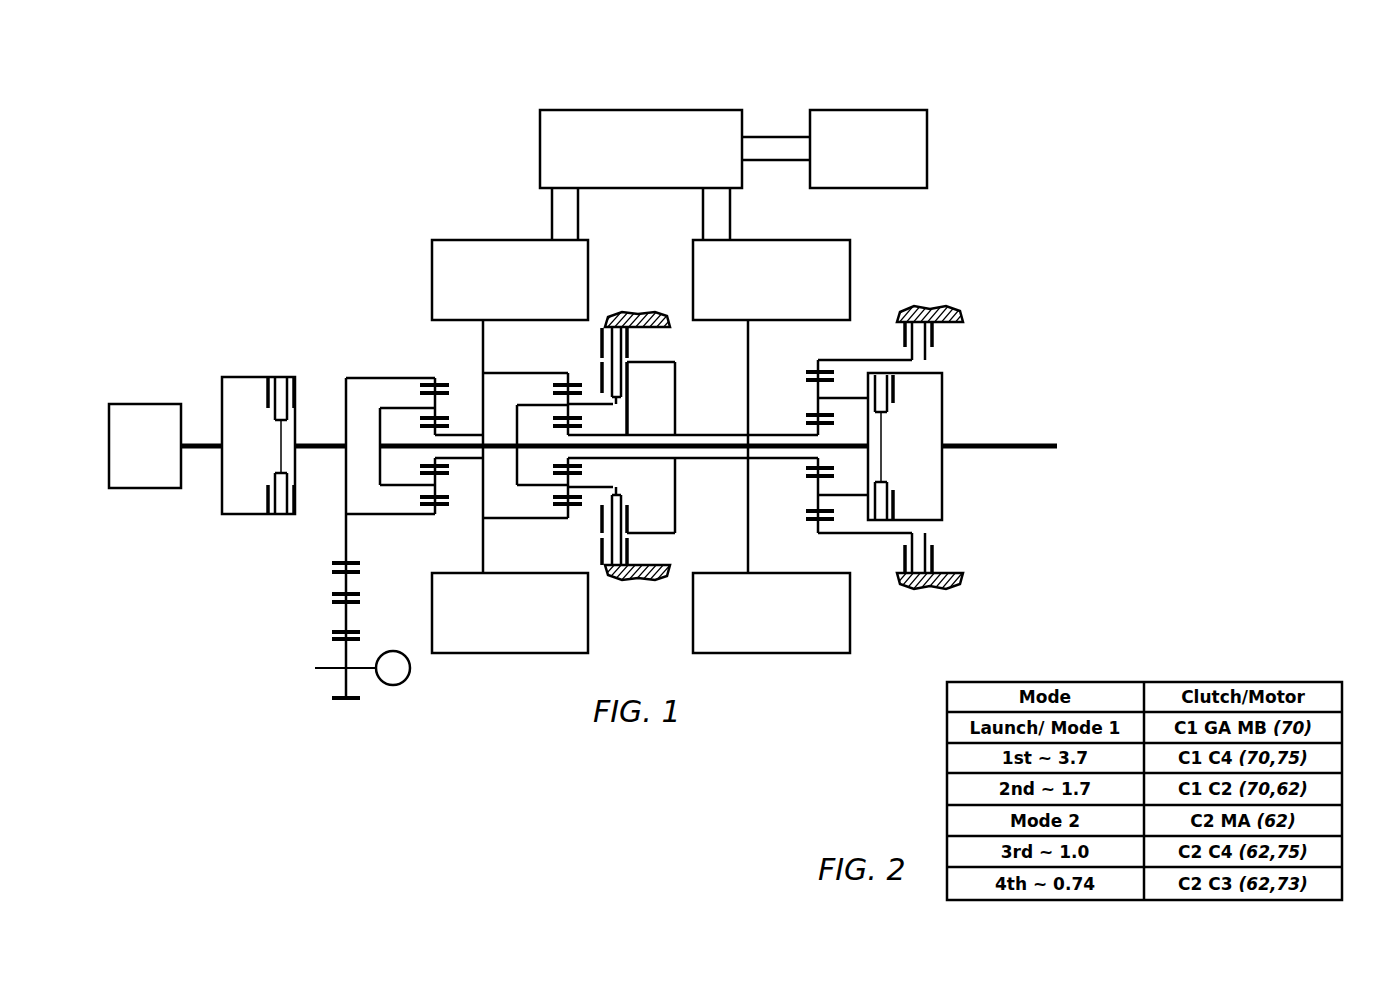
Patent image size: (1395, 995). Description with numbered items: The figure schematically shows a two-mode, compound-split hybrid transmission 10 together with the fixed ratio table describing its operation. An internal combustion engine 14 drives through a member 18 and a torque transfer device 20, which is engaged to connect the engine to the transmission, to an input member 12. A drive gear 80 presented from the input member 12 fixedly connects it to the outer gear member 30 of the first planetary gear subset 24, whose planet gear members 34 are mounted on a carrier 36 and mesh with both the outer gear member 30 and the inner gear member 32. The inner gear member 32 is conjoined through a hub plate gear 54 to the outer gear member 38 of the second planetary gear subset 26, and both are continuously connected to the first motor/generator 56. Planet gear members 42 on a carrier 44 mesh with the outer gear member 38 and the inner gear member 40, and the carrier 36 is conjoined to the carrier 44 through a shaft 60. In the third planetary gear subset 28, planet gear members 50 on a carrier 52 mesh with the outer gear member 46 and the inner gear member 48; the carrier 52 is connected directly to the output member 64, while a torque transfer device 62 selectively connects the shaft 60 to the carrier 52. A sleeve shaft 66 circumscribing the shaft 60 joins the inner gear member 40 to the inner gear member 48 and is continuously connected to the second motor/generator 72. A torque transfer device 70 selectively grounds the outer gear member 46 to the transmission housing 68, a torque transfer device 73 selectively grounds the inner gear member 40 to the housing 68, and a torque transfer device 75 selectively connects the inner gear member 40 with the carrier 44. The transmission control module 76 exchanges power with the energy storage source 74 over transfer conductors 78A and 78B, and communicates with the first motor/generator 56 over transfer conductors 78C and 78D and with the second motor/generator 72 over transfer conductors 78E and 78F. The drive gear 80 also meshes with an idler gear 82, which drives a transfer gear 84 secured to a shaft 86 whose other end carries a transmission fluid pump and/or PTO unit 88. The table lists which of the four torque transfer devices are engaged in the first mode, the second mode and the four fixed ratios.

The hybrid transmission 10 is at (243, 212).
The input member 12 is at (314, 441).
The internal combustion engine 14 is at (145, 446).
The engine output shaft 18 is at (206, 441).
The torque transfer device 20 is at (258, 371).
The first planetary gear subset 24 is at (407, 371).
The second planetary gear subset 26 is at (540, 361).
The third planetary gear subset 28 is at (812, 361).
The outer gear member 30 is at (433, 383).
The inner gear member 32 is at (444, 429).
The planet gear members 34 is at (428, 397).
The carrier 36 is at (380, 462).
The outer gear member 38 is at (568, 381).
The inner gear member 40 is at (571, 429).
The planet gear members 42 is at (565, 397).
The carrier 44 is at (515, 471).
The outer gear member 46 is at (807, 378).
The inner gear member 48 is at (807, 424).
The planet gear members 50 is at (817, 398).
The carrier 52 is at (943, 397).
The hub plate gear 54 is at (485, 429).
The first motor/generator 56 is at (510, 446).
The shaft 60 is at (748, 462).
The torque transfer device 62 is at (893, 413).
The transmission output member 64 is at (1050, 441).
The sleeve shaft 66 is at (748, 432).
The transmission housing 68 is at (628, 312).
The torque transfer device 70 is at (891, 325).
The second motor/generator 72 is at (771, 446).
The torque transfer device 73 is at (636, 348).
The energy storage source 74 is at (868, 149).
The torque transfer device 75 is at (626, 399).
The transmission control module 76 is at (641, 149).
The transfer conductor 78A is at (776, 136).
The transfer conductor 78B is at (774, 162).
The transfer conductor 78C is at (550, 215).
The transfer conductor 78D is at (580, 212).
The transfer conductor 78E is at (702, 218).
The transfer conductor 78F is at (732, 212).
The drive gear 80 is at (345, 498).
The idler gear 82 is at (344, 582).
The transfer gear 84 is at (344, 652).
The shaft 86 is at (357, 672).
The transmission fluid pump and/or PTO unit 88 is at (398, 686).